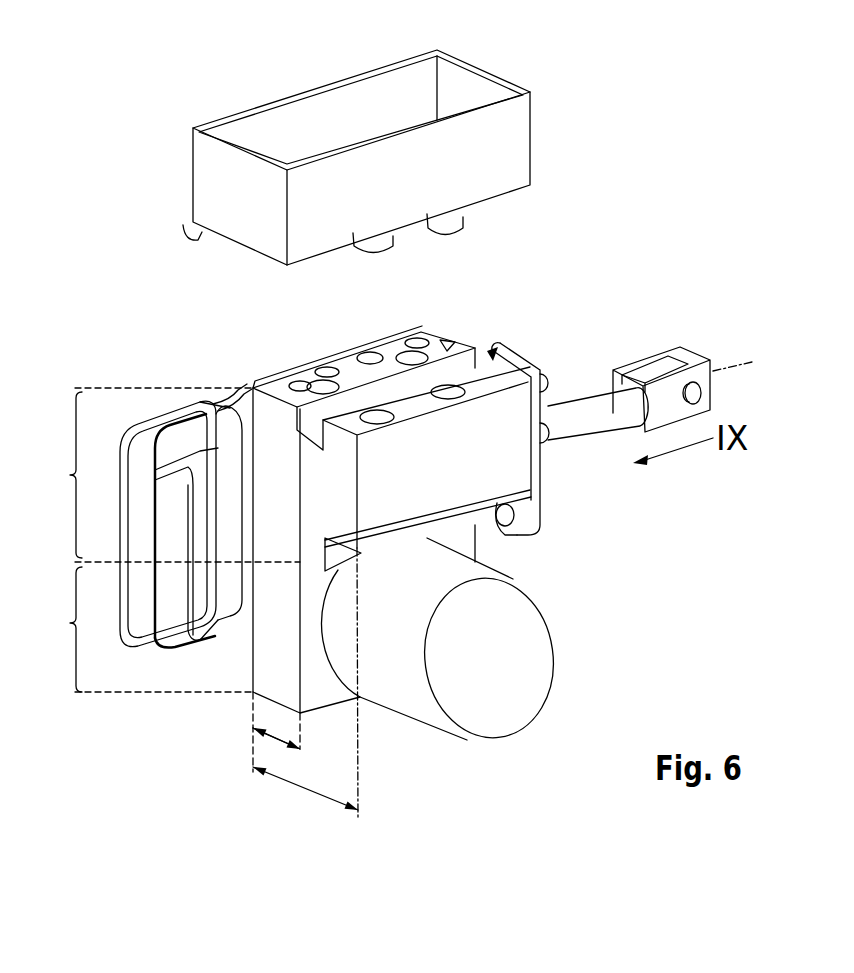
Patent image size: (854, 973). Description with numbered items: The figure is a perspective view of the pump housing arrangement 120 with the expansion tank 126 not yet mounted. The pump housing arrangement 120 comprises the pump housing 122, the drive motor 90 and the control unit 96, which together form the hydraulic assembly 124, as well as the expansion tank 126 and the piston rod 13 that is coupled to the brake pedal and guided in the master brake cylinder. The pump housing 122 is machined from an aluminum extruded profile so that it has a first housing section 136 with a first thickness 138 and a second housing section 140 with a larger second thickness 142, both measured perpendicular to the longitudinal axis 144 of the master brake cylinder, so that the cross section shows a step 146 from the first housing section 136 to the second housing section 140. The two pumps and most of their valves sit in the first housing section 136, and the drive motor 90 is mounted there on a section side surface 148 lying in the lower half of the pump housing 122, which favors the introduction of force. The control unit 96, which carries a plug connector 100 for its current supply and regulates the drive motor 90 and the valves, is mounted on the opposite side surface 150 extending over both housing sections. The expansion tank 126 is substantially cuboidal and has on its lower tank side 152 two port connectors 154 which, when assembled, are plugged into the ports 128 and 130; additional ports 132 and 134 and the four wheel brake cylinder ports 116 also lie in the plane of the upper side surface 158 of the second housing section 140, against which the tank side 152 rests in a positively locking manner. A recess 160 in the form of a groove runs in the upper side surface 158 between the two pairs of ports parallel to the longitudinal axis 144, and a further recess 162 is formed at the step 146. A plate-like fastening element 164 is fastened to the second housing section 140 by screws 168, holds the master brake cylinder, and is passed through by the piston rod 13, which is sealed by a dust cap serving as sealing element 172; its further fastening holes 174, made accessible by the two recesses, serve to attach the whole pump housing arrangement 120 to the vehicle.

The pump housing arrangement 120 is at (150, 48).
The expansion tank 126 is at (472, 88).
The lower tank side 152 is at (197, 233).
The port connectors 154 is at (455, 222).
The hydraulic assembly 124 is at (118, 375).
The control unit 96 is at (167, 410).
The plug connector 100 is at (175, 530).
The second housing section 140 is at (55, 475).
The first housing section 136 is at (55, 629).
The pump housing 122 is at (520, 473).
The fastening element 164 is at (538, 497).
The further fastening holes 174 is at (547, 520).
The side surface 150 is at (253, 676).
The step 146 is at (316, 582).
The additional port 134 is at (323, 385).
The wheel brake cylinder ports 116 is at (372, 357).
The additional port 132 is at (415, 357).
The port 130 is at (383, 420).
The port 128 is at (455, 395).
The upper side surface 158 is at (449, 345).
The recess 160 is at (494, 350).
The screw 168 is at (548, 374).
The sealing element 172 is at (552, 440).
The further recess 162 is at (503, 523).
The piston rod 13 is at (592, 402).
The longitudinal axis 144 is at (733, 363).
The drive motor 90 is at (538, 658).
The section side surface 148 is at (325, 690).
The first thickness 138 is at (277, 742).
The second thickness 142 is at (310, 790).